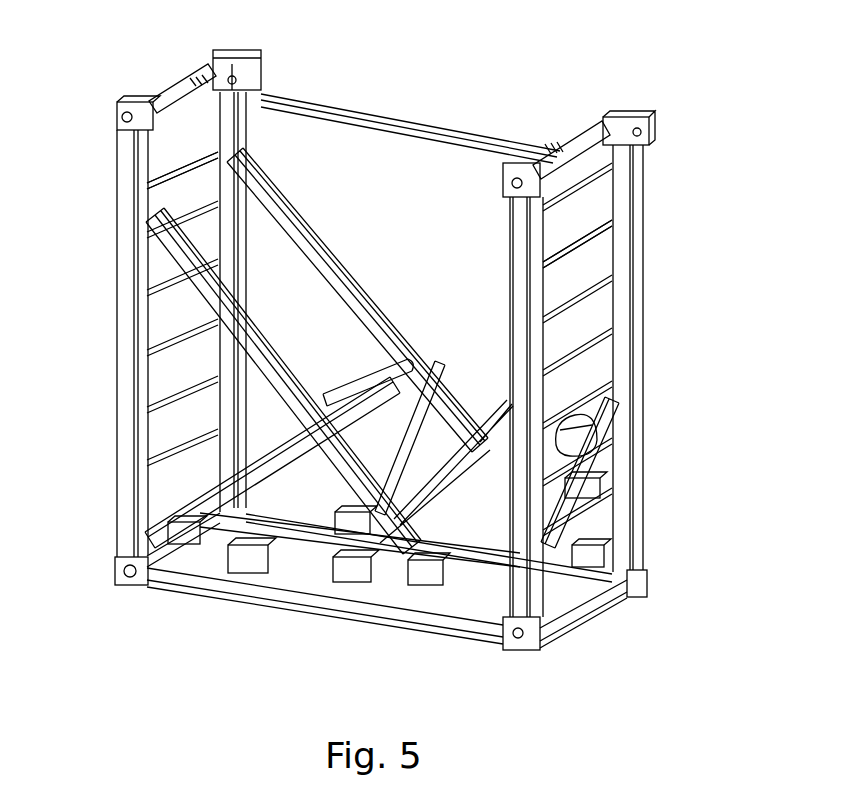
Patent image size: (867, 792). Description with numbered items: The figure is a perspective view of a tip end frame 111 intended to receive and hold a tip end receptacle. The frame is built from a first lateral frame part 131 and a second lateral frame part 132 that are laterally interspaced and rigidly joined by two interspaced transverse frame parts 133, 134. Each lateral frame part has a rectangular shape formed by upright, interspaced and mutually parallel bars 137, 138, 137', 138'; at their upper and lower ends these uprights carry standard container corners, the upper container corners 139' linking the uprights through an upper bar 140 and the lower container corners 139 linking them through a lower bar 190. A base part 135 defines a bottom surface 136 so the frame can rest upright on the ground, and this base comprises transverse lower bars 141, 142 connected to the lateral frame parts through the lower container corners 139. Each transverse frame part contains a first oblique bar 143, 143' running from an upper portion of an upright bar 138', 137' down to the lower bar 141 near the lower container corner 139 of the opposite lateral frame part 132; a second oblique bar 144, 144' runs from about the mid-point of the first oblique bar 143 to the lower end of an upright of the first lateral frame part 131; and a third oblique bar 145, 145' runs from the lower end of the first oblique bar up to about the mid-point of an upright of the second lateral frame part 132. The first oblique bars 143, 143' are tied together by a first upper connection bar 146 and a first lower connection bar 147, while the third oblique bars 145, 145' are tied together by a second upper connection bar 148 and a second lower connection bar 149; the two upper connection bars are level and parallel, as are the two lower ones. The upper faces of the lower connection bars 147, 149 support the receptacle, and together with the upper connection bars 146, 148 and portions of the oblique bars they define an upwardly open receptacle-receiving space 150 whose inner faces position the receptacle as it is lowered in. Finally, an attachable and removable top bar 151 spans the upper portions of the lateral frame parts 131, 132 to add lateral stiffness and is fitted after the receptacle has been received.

The tip end frame 111 is at (670, 490).
The first lateral frame part 131 is at (112, 158).
The second lateral frame part 132 is at (650, 192).
The transverse frame part 133 is at (155, 277).
The transverse frame part 134 is at (306, 200).
The base part 135 is at (160, 596).
The bottom surface 136 is at (204, 595).
The upright bar 137 is at (623, 299).
The upright bar 137' is at (239, 155).
The upright bar 138 is at (623, 244).
The upright bar 138' is at (125, 217).
The lower standard container corner 139 is at (569, 665).
The upper standard container corner 139' is at (647, 104).
The upper bar 140 is at (588, 135).
The transverse lower bar 141 is at (346, 606).
The transverse lower bar 142 is at (296, 532).
The first oblique bar 143 is at (223, 381).
The first oblique bar 143' is at (357, 300).
The second oblique bar 144 is at (217, 462).
The second oblique bar 144' is at (222, 583).
The third oblique bar 145 is at (419, 524).
The third oblique bar 145' is at (633, 456).
The first upper connection bar 146 is at (362, 384).
The first lower connection bar 147 is at (404, 562).
The second upper connection bar 148 is at (612, 435).
The second lower connection bar 149 is at (488, 562).
The receptacle-receiving space 150 is at (409, 420).
The top bar 151 is at (432, 120).
The lower bar 190 is at (606, 606).